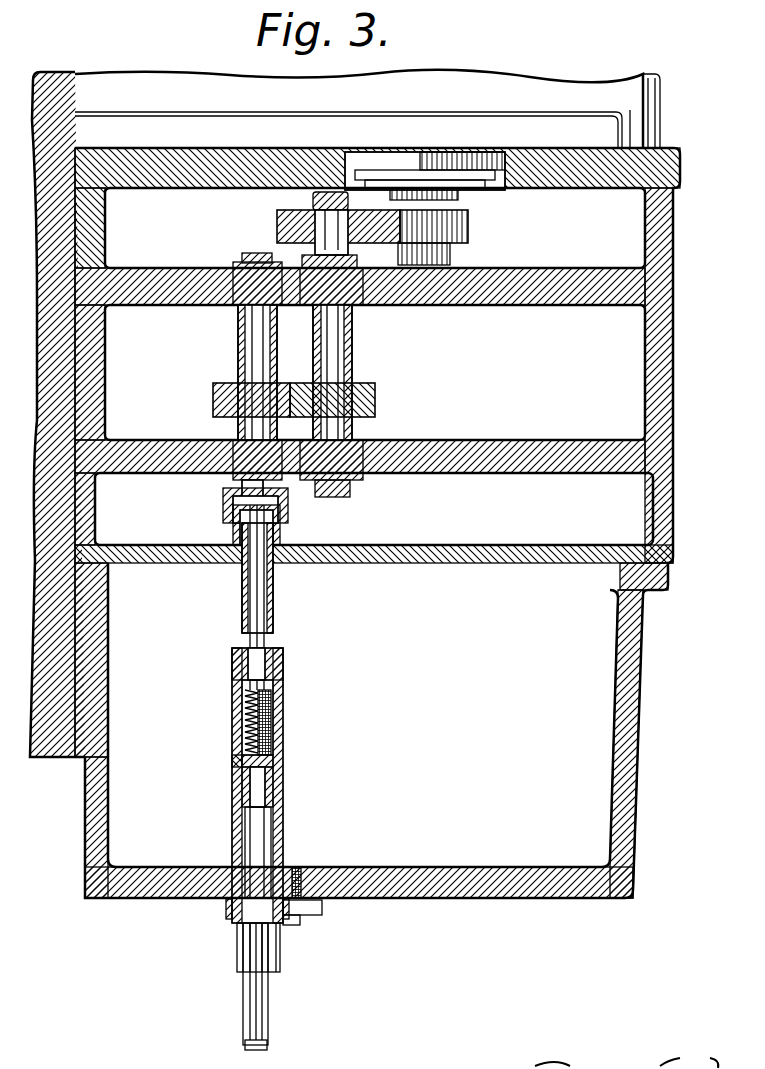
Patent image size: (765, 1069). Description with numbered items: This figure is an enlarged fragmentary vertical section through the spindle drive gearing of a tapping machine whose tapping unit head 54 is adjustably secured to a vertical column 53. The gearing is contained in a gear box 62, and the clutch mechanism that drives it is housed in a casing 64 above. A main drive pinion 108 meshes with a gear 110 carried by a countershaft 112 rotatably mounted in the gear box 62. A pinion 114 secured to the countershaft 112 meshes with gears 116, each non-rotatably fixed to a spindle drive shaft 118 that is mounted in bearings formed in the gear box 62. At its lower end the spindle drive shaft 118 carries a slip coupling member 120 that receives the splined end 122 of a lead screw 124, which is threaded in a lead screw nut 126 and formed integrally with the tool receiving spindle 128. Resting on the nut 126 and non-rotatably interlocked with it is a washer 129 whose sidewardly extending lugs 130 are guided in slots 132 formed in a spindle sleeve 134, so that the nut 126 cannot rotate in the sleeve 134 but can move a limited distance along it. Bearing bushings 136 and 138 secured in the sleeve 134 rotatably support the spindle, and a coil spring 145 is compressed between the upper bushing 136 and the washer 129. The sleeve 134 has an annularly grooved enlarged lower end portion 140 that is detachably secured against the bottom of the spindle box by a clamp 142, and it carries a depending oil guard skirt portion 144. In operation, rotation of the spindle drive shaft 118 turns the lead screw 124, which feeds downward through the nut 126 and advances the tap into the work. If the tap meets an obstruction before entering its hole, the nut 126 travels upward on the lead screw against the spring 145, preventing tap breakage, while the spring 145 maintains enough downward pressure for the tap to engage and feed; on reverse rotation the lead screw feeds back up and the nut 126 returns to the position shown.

The vertical column 53 is at (38, 760).
The tapping unit head 54 is at (467, 85).
The gear box 62 is at (677, 400).
The casing 64 is at (558, 92).
The main drive pinion 108 is at (452, 222).
The gear 110 is at (280, 212).
The countershaft 112 is at (340, 330).
The pinion 114 is at (378, 386).
The gears 116 is at (230, 383).
The spindle drive shaft 118 is at (238, 324).
The slip coupling member 120 is at (272, 602).
The splined end 122 is at (248, 594).
The lead screw 124 is at (250, 705).
The lead screw nut 126 is at (283, 778).
The tool receiving spindle 128 is at (255, 1015).
The washer 129 is at (235, 762).
The lugs 130 is at (283, 762).
The slots 132 is at (283, 720).
The spindle sleeve 134 is at (283, 680).
The bearing bushing 136 is at (233, 660).
The bearing bushing 138 is at (288, 880).
The enlarged lower end portion 140 is at (228, 905).
The clamp 142 is at (320, 912).
The oil guard skirt portion 144 is at (237, 955).
The coil spring 145 is at (243, 732).